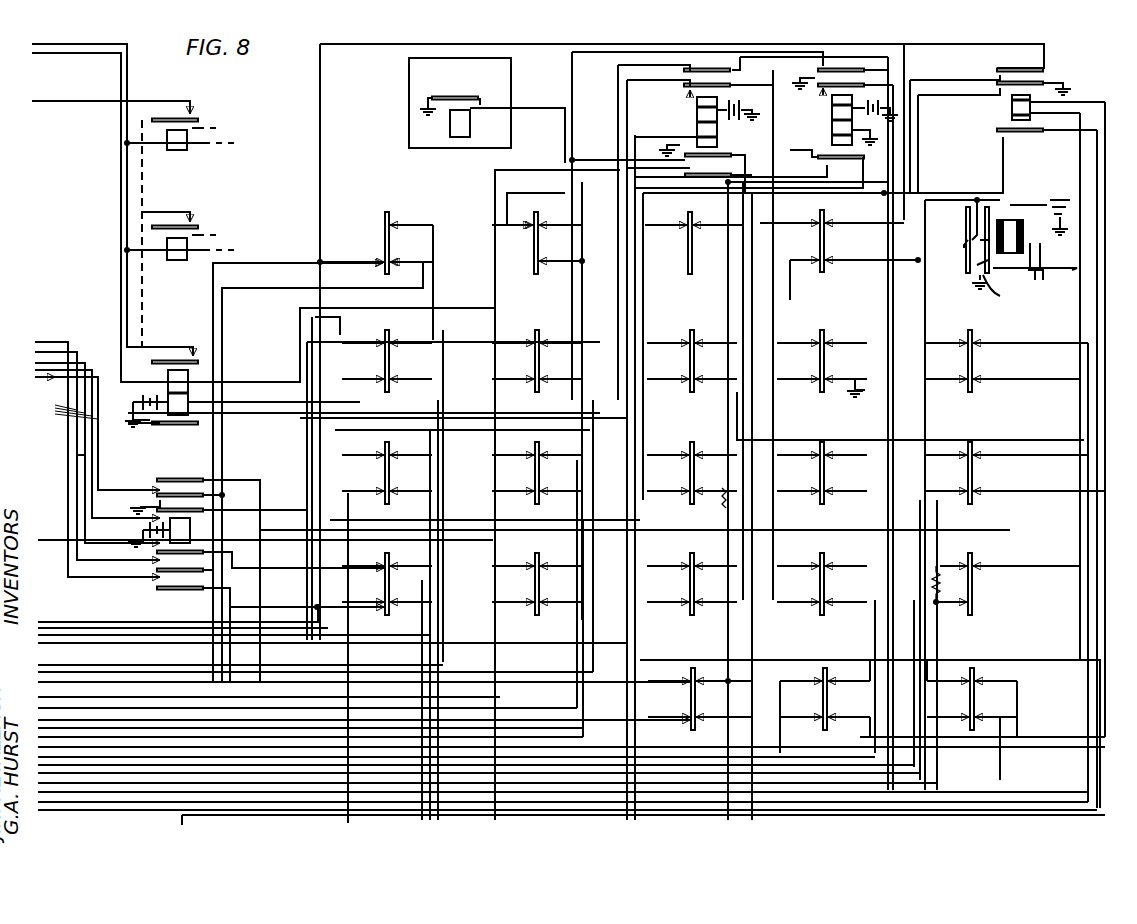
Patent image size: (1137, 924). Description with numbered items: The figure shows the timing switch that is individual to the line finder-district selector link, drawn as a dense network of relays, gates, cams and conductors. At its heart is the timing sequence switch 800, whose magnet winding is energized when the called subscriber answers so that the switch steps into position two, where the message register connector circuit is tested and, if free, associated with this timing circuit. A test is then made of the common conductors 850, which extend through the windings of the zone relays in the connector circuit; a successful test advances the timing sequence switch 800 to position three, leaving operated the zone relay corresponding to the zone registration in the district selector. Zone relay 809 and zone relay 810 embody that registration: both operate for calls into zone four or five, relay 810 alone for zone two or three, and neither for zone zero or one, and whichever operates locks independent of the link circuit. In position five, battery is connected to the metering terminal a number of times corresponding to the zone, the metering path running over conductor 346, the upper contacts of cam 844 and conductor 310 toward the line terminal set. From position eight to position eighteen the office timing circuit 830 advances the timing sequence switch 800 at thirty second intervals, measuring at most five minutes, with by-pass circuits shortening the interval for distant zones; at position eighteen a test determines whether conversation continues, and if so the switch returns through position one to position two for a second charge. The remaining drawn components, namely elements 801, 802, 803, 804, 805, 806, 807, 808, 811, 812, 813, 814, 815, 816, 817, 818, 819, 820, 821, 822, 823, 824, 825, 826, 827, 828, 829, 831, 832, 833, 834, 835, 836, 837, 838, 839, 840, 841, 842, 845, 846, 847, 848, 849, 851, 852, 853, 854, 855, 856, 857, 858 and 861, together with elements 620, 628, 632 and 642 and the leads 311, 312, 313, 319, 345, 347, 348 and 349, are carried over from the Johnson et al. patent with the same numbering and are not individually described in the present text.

The timing sequence switch 800 is at (1012, 222).
The gate 801 is at (385, 473).
The lead 802 is at (722, 633).
The gate 803 is at (972, 358).
The gate 804 is at (827, 700).
The lead 805 is at (645, 760).
The resistor 806 is at (940, 545).
The gate 807 is at (824, 587).
The lead 808 is at (216, 752).
The zone relay 809 is at (832, 120).
The zone relay 810 is at (697, 130).
The lead 811 is at (640, 815).
The lead 812 is at (893, 410).
The gate 813 is at (690, 360).
The lead 814 is at (678, 413).
The lead 815 is at (562, 712).
The gate 816 is at (539, 587).
The lead 817 is at (580, 652).
The gate 818 is at (690, 473).
The gate 819 is at (385, 360).
The gate 820 is at (538, 243).
The relay 821 is at (1012, 108).
The lead 822 is at (432, 568).
The relay 823 is at (178, 370).
The lead 824 is at (125, 75).
The gate 825 is at (385, 243).
The relay contacts 826 is at (127, 167).
The relay 827 is at (172, 510).
The lead 828 is at (262, 607).
The gate 829 is at (824, 473).
The office timing circuit 830 is at (409, 93).
The lead 831 is at (212, 700).
The lead 832 is at (142, 672).
The input leads 833 is at (70, 352).
The gate 834 is at (690, 587).
The lead 835 is at (100, 475).
The lead 836 is at (145, 580).
The gate 837 is at (691, 700).
The lead 838 is at (88, 562).
The gate 839 is at (539, 360).
The lead 840 is at (98, 455).
The gate 841 is at (968, 700).
The gate 842 is at (385, 587).
The cam 844 is at (972, 473).
The gate 845 is at (972, 587).
The lead 846 is at (1080, 613).
The gate 847 is at (688, 243).
The gate 848 is at (824, 358).
The gate 849 is at (539, 473).
The common conductors 850 is at (58, 409).
The lead 851 is at (800, 748).
The lead 852 is at (105, 672).
The lead 853 is at (790, 535).
The lead 854 is at (432, 607).
The gate 855 is at (824, 242).
The resistor 856 is at (720, 508).
The lead 857 is at (930, 748).
The lead 858 is at (1003, 748).
The lead 861 is at (58, 103).
The lead 620 is at (348, 540).
The lead 628 is at (750, 650).
The lead 632 is at (788, 638).
The lead 642 is at (1010, 700).
The conductor 310 is at (1090, 771).
The lead 311 is at (315, 540).
The lead 312 is at (1043, 662).
The lead 313 is at (937, 771).
The lead 319 is at (888, 815).
The lead 345 is at (150, 705).
The conductor 346 is at (168, 790).
The lead 347 is at (625, 702).
The lead 348 is at (498, 815).
The lead 349 is at (70, 620).